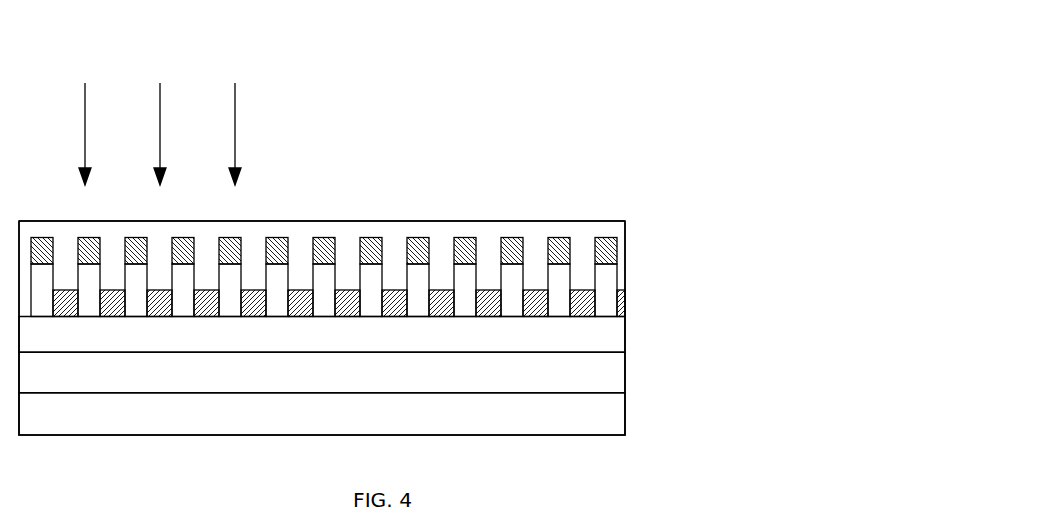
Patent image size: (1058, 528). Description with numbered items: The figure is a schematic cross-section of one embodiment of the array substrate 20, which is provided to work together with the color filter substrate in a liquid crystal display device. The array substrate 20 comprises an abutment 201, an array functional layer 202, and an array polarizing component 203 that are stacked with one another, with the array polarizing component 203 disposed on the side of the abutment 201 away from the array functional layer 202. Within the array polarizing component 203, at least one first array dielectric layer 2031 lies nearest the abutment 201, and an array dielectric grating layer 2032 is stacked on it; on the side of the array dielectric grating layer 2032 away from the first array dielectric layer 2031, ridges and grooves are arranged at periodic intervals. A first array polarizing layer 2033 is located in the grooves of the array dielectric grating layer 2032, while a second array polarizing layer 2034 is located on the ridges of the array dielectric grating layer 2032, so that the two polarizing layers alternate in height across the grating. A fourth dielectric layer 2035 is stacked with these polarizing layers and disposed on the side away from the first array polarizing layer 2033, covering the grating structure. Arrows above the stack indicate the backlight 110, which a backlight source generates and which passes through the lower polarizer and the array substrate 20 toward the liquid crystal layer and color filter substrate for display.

The backlight 110 is at (160, 108).
The array substrate 20 is at (410, 142).
The array polarizing component 203 is at (775, 200).
The fourth dielectric layer 2035 is at (617, 235).
The second array polarizing layer 2034 is at (615, 240).
The array dielectric grating layer 2032 is at (603, 275).
The first array polarizing layer 2033 is at (628, 298).
The first array dielectric layer 2031 is at (603, 345).
The abutment 201 is at (610, 380).
The array functional layer 202 is at (607, 418).